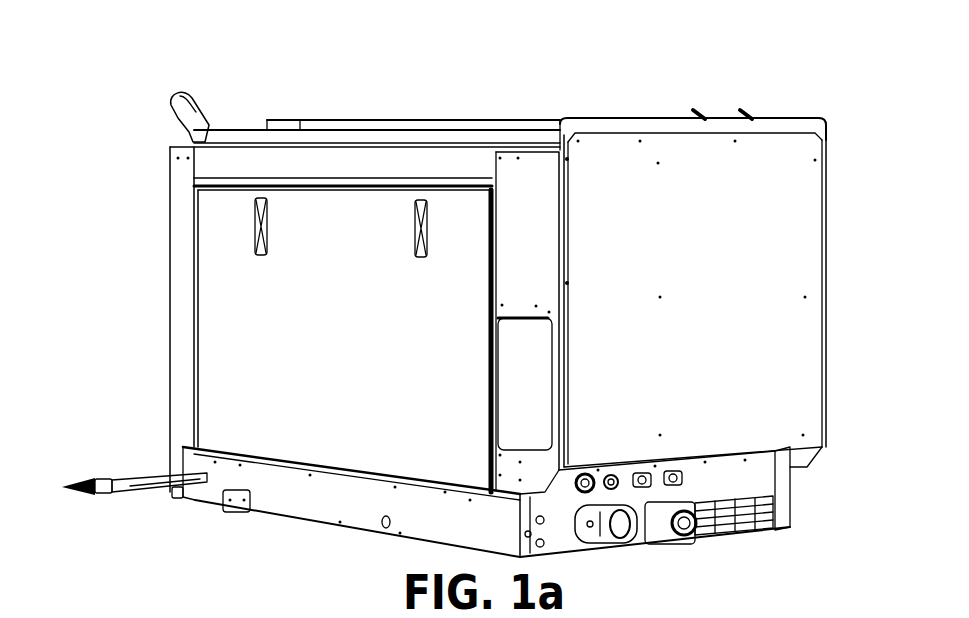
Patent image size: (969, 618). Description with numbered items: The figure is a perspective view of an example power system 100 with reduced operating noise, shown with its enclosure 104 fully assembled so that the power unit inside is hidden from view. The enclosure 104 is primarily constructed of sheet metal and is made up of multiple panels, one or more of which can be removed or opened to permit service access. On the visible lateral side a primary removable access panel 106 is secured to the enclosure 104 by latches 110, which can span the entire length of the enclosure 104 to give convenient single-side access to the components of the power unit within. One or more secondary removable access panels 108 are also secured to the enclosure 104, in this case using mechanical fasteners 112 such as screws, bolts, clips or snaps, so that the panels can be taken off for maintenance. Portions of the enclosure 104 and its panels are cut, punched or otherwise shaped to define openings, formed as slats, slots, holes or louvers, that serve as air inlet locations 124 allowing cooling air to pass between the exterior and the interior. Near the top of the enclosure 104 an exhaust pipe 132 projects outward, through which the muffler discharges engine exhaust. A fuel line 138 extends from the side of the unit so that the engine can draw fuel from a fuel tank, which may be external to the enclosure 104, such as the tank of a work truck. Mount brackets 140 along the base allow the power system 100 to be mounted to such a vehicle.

The power system 100 is at (110, 56).
The enclosure 104 is at (764, 96).
The primary removable access panel 106 is at (272, 318).
The secondary removable access panel 108 is at (516, 312).
The latch 110 is at (266, 226).
The mechanical fastener 112 is at (567, 159).
The air inlet location 124 is at (790, 505).
The exhaust pipe 132 is at (204, 110).
The fuel line 138 is at (125, 476).
The mount bracket 140 is at (249, 512).